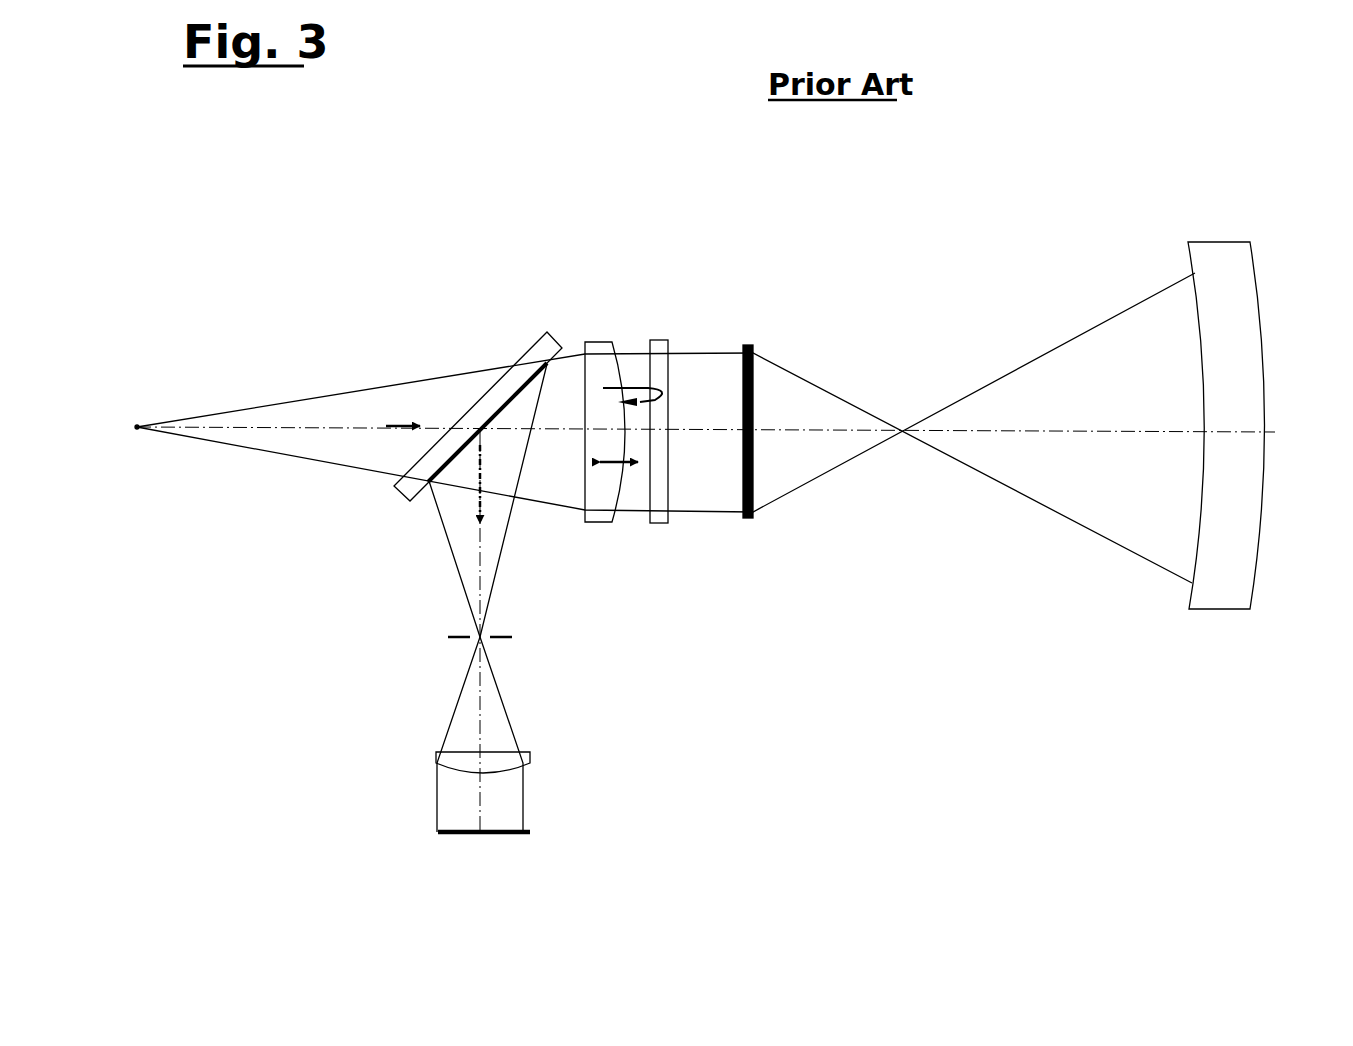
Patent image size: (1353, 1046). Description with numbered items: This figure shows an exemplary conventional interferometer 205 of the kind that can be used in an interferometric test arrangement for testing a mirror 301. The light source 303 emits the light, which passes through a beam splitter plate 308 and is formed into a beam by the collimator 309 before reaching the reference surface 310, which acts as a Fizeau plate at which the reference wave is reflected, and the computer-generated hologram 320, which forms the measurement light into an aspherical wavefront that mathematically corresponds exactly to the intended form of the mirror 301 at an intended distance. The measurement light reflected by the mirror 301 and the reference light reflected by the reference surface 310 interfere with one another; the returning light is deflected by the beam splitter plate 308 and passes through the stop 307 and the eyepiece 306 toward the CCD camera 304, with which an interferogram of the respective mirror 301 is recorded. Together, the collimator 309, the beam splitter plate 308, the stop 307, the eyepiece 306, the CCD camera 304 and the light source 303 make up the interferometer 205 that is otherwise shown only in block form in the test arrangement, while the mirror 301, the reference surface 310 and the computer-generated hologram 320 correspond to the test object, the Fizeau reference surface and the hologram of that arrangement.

The interferometer 205 is at (450, 224).
The mirror 301 is at (1213, 598).
The light source 303 is at (157, 430).
The CCD camera 304 is at (532, 834).
The eyepiece 306 is at (530, 757).
The stop 307 is at (420, 640).
The beam splitter plate 308 is at (538, 348).
The collimator 309 is at (590, 515).
The reference surface 310 is at (655, 515).
The computer-generated hologram 320 is at (752, 514).